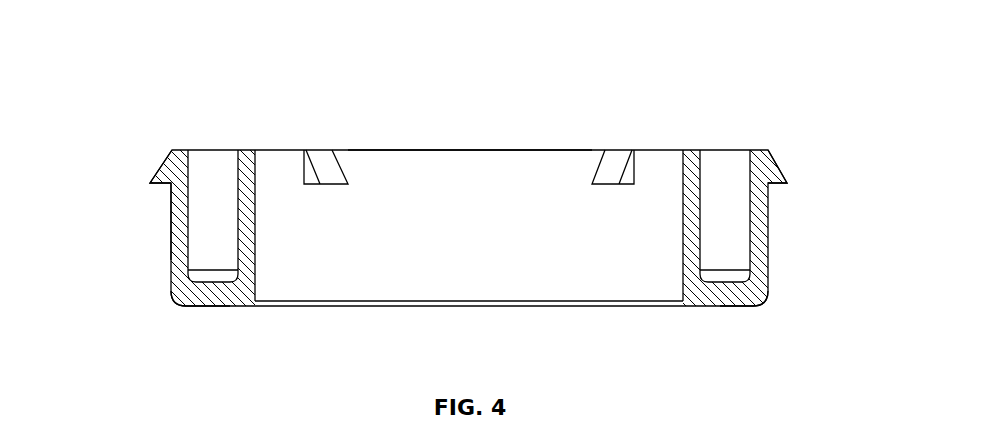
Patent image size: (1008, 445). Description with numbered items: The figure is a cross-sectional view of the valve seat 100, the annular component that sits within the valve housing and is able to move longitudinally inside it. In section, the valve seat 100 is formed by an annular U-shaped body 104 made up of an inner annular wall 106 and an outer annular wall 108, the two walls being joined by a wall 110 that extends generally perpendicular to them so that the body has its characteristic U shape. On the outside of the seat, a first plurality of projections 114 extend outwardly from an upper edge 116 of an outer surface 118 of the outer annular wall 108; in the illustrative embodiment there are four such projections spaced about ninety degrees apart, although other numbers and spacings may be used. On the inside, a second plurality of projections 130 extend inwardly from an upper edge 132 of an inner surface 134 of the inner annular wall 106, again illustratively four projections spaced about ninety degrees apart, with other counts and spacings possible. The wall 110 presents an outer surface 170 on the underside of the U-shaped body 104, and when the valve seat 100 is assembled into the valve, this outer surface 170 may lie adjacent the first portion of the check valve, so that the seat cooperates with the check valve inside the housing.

The valve seat 100 is at (150, 98).
The annular U-shaped body 104 is at (217, 307).
The inner annular wall 106 is at (168, 248).
The outer annular wall 108 is at (258, 252).
The wall 110 is at (708, 307).
The first plurality of projections 114 is at (164, 163).
The upper edge 116 is at (170, 190).
The outer surface 118 is at (170, 213).
The second plurality of projections 130 is at (322, 162).
The upper edge 132 is at (392, 170).
The inner surface 134 is at (398, 268).
The outer surface 170 is at (740, 307).